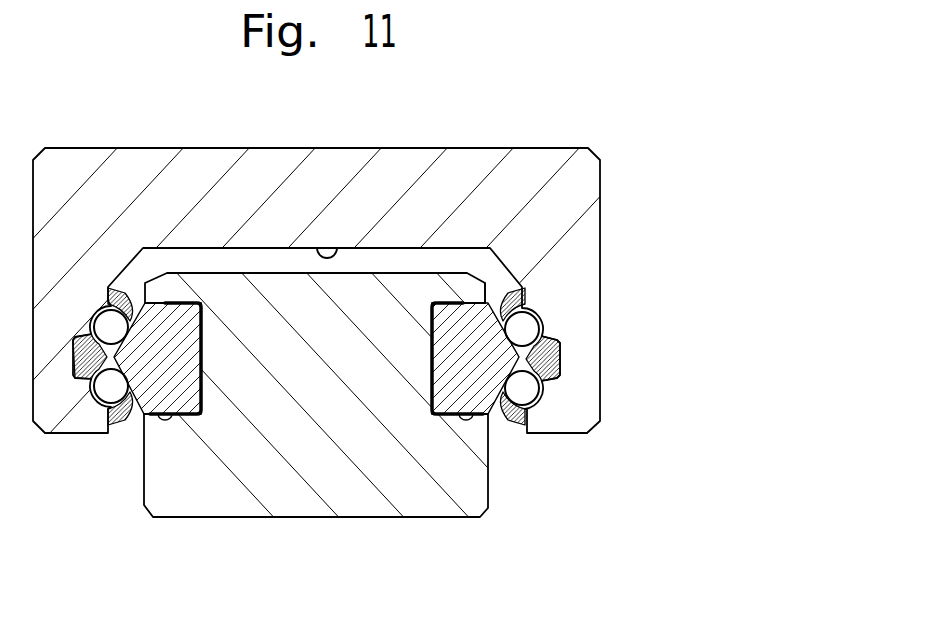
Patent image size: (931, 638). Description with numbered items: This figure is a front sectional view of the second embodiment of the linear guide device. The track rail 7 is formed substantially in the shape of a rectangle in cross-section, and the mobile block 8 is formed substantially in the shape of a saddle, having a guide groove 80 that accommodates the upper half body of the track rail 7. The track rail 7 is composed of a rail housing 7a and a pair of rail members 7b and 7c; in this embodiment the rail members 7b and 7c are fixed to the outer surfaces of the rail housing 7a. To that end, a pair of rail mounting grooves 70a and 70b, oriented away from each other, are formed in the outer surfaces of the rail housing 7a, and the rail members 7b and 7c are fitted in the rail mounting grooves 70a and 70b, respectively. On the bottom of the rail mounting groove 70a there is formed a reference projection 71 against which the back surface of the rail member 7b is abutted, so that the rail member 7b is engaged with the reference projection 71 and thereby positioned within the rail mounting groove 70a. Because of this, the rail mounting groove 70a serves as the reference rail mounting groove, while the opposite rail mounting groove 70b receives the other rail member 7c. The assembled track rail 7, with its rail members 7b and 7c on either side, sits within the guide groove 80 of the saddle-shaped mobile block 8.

The track rail 7 is at (465, 319).
The rail housing 7a is at (395, 478).
The rail member 7b is at (475, 392).
The rail member 7c is at (178, 392).
The mobile block 8 is at (619, 213).
The rail mounting groove 70a is at (463, 296).
The rail mounting groove 70b is at (197, 332).
The reference projection 71 is at (473, 356).
The guide groove 80 is at (338, 248).